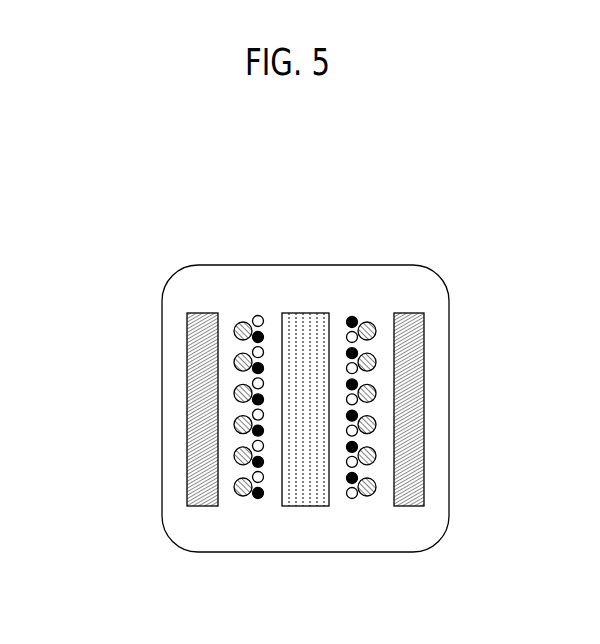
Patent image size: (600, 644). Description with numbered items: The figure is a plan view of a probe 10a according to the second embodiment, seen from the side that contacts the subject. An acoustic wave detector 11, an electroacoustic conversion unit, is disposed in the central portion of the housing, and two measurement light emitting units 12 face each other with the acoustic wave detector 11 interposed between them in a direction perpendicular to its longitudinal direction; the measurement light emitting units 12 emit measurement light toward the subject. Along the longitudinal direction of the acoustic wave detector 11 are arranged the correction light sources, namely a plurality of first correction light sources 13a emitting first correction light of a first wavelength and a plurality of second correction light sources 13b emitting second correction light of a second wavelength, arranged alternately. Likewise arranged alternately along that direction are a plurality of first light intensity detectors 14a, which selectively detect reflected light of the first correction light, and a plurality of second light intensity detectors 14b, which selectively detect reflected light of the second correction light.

The probe 10a is at (492, 249).
The acoustic wave detector 11 is at (300, 313).
The measurement light emitting unit 12 is at (184, 369).
The first correction light source 13a is at (256, 315).
The second correction light source 13b is at (262, 333).
The first light intensity detector 14a is at (237, 323).
The second light intensity detector 14b is at (237, 355).